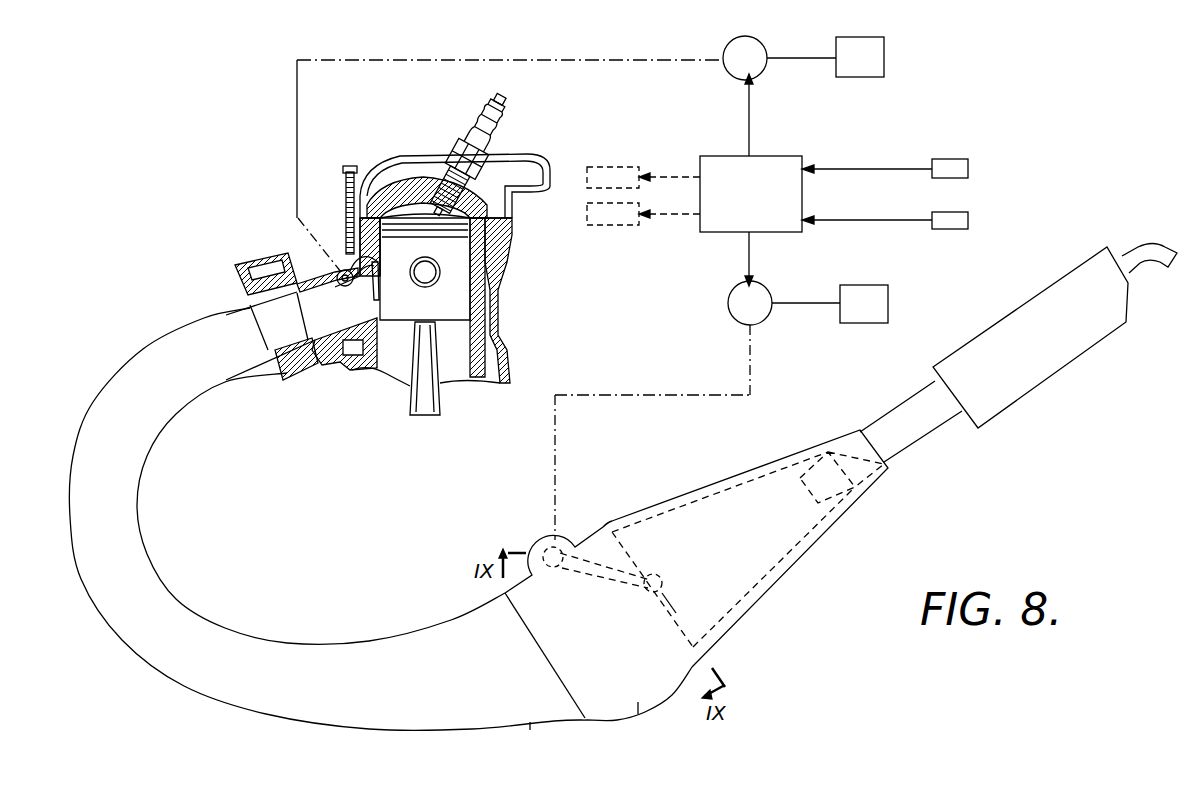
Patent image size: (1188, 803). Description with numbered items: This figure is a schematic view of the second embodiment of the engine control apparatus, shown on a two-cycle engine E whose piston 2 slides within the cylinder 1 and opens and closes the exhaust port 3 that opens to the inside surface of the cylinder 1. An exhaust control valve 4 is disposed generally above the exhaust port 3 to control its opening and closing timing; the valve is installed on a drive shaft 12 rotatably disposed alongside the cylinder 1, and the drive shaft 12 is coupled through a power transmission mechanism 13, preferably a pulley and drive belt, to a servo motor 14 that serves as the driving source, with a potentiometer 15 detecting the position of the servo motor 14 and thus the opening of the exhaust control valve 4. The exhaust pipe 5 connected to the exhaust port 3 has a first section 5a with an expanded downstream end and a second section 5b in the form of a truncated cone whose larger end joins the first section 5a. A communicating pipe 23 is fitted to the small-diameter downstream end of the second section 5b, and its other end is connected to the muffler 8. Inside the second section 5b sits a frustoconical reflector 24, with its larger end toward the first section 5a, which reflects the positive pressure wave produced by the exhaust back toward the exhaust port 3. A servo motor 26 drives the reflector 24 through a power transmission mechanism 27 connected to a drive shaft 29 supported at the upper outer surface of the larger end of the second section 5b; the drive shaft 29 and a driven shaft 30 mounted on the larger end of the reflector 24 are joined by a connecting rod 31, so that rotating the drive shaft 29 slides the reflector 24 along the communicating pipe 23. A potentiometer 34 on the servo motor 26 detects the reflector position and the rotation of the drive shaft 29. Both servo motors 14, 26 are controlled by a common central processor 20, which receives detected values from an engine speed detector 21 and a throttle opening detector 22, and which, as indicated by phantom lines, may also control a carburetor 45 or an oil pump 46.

The cylinder 1 is at (354, 368).
The piston 2 is at (417, 311).
The exhaust port 3 is at (377, 297).
The exhaust control valve 4 is at (383, 273).
The exhaust pipe 5 is at (365, 518).
The first exhaust pipe section 5a is at (545, 748).
The second exhaust pipe section 5b is at (645, 721).
The muffler 8 is at (1037, 302).
The drive shaft 12 is at (330, 268).
The power transmission mechanism 13 is at (543, 57).
The servo motor 14 is at (762, 42).
The potentiometer 15 is at (884, 44).
The central processor 20 is at (760, 211).
The engine speed detector 21 is at (966, 165).
The throttle opening detector 22 is at (966, 215).
The communicating pipe 23 is at (937, 418).
The reflector 24 is at (785, 560).
The servo motor 26 is at (777, 284).
The power transmission mechanism 27 is at (645, 398).
The drive shaft 29 is at (551, 570).
The driven shaft 30 is at (675, 585).
The connecting rod 31 is at (580, 575).
The potentiometer 34 is at (888, 288).
The carburetor 45 is at (618, 166).
The oil pump 46 is at (620, 224).
The engine E is at (516, 273).